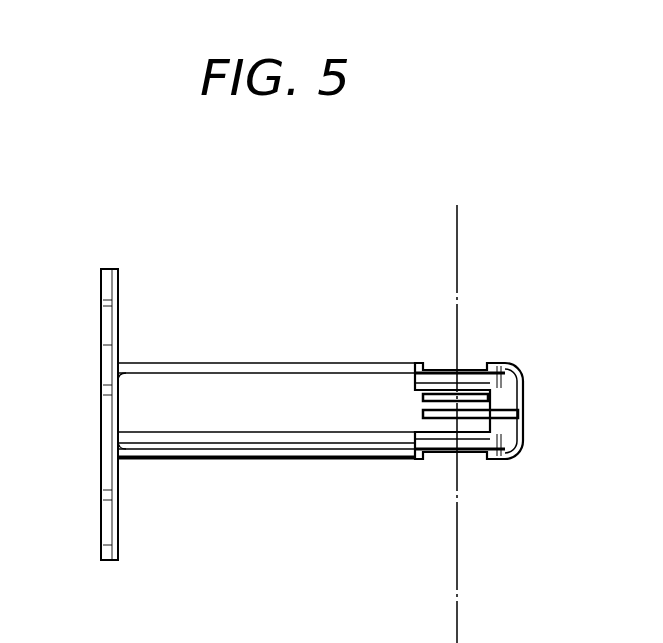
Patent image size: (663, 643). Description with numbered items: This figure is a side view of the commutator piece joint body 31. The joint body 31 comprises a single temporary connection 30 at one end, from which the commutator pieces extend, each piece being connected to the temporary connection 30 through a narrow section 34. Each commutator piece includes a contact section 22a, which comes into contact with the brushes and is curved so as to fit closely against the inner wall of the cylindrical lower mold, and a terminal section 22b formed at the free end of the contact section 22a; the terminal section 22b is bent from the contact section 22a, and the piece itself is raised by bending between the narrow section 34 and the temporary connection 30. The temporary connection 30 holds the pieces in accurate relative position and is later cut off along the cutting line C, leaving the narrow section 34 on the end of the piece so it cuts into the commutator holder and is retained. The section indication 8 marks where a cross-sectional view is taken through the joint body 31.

The terminal section 22b is at (110, 281).
The contact section 22a is at (325, 362).
The commutator piece joint body 31 is at (189, 300).
The temporary connection 30 is at (526, 403).
The narrow section 34 is at (466, 392).
The section line 8- 8 is at (345, 247).
The cutting line C is at (456, 583).